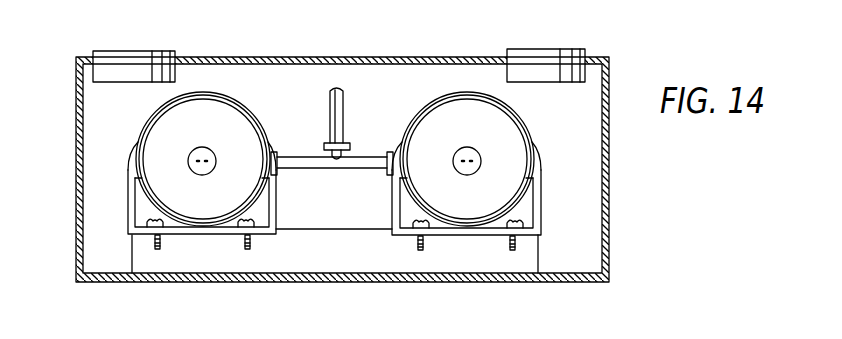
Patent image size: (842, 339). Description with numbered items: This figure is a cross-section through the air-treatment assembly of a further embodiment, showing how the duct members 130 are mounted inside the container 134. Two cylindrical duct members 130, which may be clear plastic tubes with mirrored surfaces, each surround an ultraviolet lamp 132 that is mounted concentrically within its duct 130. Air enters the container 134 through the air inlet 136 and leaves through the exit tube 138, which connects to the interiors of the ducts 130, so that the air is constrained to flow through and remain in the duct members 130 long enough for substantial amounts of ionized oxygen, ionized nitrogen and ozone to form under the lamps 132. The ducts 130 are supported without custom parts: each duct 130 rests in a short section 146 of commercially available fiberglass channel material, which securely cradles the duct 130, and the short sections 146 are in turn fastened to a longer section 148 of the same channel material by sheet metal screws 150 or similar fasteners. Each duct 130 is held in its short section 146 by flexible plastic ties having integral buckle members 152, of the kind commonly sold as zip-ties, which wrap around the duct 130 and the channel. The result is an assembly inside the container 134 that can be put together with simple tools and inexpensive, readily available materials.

The duct member 130 is at (217, 94).
The ultraviolet lamp 132 is at (483, 140).
The container 134 is at (609, 165).
The air inlet 136 is at (568, 50).
The exit tube 138 is at (330, 120).
The short section of channel section material 146 is at (131, 203).
The longer section of channel material 148 is at (352, 266).
The sheet metal screw 150 is at (247, 250).
The buckle member 152 is at (131, 161).